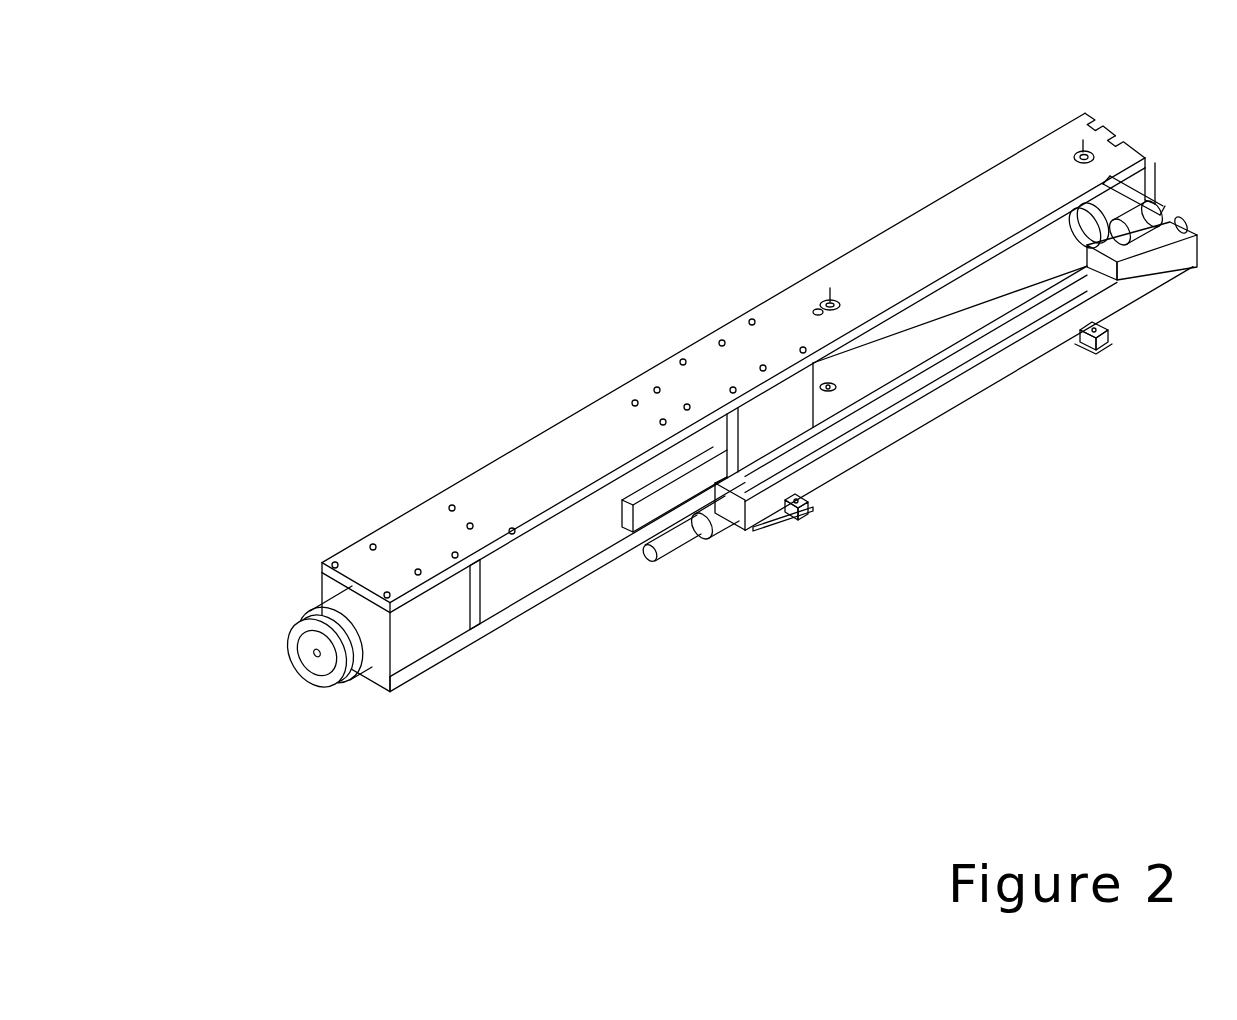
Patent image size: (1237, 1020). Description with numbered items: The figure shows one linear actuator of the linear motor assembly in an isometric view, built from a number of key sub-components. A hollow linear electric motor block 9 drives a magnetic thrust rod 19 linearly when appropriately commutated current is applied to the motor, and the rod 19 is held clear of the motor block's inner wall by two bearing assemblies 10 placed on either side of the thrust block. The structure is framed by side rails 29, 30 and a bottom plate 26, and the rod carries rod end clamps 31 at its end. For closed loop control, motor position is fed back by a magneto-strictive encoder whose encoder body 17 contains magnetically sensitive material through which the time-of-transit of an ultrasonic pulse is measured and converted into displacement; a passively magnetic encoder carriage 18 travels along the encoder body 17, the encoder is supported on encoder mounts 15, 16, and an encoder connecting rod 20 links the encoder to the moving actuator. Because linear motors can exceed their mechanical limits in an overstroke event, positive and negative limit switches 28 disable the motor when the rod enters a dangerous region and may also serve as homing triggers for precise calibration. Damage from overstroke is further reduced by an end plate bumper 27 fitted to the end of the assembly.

The linear electric motor block 9 is at (590, 537).
The bearing assembly 10 is at (430, 625).
The encoder mount 15 is at (760, 530).
The encoder mount 16 is at (1077, 340).
The encoder body 17 is at (898, 410).
The encoder carriage 18 is at (1123, 258).
The magnetic thrust rod 19 is at (950, 293).
The encoder connecting rod 20 is at (1093, 248).
The bottom plate 26 is at (1083, 115).
The end plate bumper 27 is at (1060, 130).
The limit switch 28 is at (815, 298).
The side rail 29 is at (715, 370).
The side rail 30 is at (375, 680).
The rod end clamp 31 is at (310, 622).